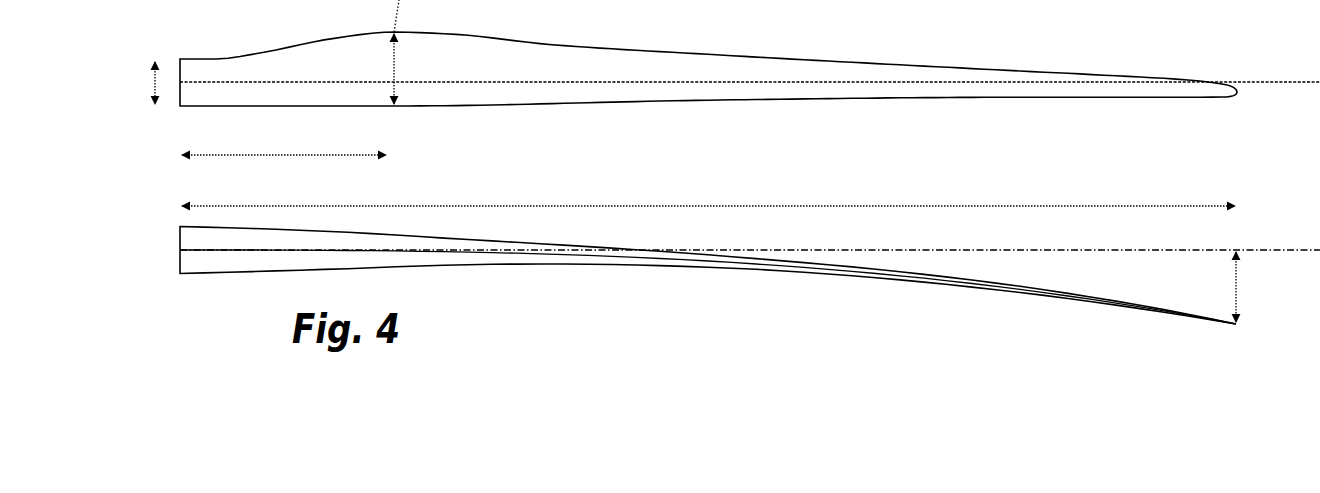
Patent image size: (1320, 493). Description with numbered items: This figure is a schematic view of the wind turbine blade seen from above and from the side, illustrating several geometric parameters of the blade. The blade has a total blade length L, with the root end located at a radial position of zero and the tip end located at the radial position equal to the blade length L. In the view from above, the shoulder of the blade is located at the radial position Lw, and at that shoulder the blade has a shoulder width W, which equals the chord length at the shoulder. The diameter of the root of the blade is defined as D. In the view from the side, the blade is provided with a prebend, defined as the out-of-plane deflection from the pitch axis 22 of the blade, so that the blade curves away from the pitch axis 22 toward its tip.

The pitch axis 22 is at (599, 80).
The root diameter D is at (143, 83).
The shoulder width W is at (408, 69).
The shoulder position Lw is at (284, 143).
The total blade length L is at (708, 191).